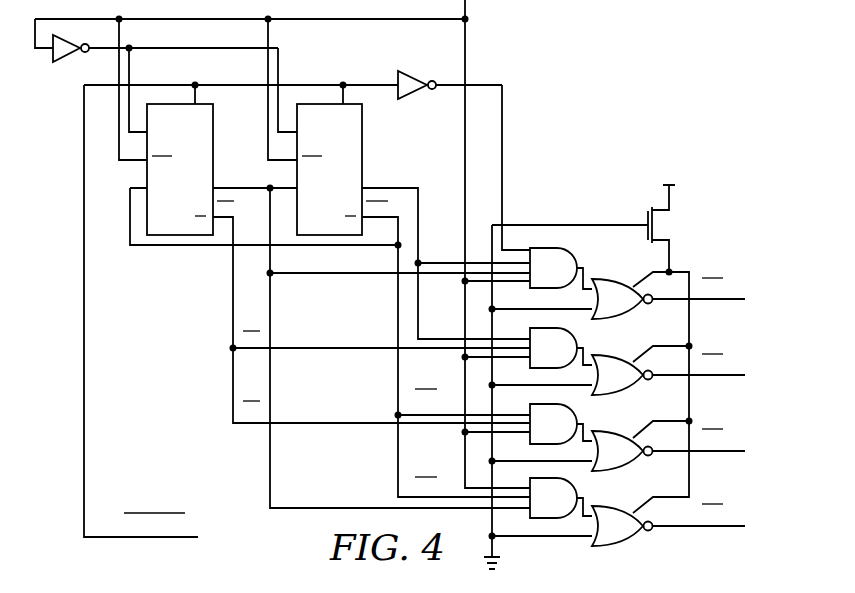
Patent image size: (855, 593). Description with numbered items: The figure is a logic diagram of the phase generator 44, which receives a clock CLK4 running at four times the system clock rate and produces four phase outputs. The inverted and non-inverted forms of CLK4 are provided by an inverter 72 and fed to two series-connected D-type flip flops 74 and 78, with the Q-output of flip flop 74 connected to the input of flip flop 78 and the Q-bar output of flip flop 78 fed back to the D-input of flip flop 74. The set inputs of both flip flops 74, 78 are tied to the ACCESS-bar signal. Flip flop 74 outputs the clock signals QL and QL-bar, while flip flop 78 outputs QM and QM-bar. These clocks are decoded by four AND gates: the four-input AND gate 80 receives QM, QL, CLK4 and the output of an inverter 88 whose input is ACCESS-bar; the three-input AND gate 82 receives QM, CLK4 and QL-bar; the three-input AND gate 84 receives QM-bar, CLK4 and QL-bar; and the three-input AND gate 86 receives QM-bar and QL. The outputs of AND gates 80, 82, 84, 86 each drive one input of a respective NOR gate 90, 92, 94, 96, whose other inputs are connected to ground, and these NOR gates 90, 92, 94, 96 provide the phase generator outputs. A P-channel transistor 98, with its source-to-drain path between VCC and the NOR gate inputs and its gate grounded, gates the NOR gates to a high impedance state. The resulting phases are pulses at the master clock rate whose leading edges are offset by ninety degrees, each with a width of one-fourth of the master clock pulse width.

The phase generator 44 is at (552, 125).
The inverter 72 is at (62, 65).
The D-type flip flop 74 is at (213, 130).
The D-type flip flop 78 is at (362, 132).
The inverter 88 is at (413, 70).
The P-channel transistor 98 is at (646, 212).
The four-input AND gate 80 is at (558, 279).
The three-input AND gate 82 is at (558, 359).
The three-input AND gate 84 is at (558, 435).
The three-input AND gate 86 is at (558, 509).
The NOR gate 90 is at (628, 310).
The NOR gate 92 is at (628, 386).
The NOR gate 94 is at (628, 462).
The NOR gate 96 is at (628, 537).